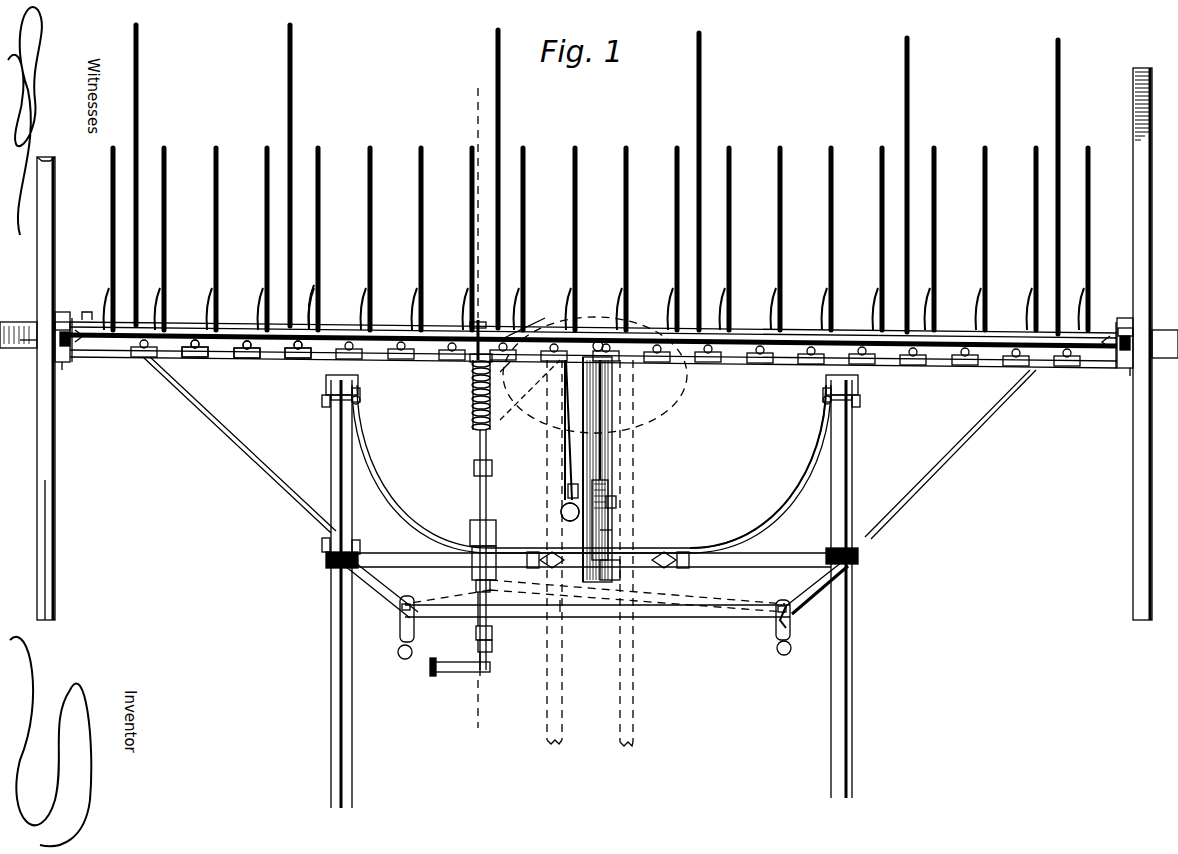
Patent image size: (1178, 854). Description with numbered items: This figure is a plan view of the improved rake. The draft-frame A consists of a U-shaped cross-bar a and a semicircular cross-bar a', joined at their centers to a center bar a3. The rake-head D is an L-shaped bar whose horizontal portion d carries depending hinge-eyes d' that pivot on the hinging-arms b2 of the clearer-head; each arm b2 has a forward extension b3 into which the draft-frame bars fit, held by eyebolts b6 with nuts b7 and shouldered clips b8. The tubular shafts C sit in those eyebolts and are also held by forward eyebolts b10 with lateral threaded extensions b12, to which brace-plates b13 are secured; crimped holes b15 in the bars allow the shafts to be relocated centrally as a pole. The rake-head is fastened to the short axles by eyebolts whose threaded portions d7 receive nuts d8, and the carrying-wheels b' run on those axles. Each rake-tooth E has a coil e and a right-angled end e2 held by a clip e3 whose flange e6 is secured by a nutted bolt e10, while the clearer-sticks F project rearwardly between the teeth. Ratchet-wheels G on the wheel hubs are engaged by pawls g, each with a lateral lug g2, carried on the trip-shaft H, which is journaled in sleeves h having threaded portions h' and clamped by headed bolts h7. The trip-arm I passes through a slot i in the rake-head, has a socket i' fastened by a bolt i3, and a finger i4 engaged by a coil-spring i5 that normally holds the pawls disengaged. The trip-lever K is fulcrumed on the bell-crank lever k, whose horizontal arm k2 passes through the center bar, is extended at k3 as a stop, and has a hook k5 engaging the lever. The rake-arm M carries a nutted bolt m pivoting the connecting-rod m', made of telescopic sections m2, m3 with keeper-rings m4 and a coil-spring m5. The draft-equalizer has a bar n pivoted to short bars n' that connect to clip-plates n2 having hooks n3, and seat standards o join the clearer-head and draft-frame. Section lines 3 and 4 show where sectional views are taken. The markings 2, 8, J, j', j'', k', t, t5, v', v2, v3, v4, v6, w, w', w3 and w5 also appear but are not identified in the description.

The clearer-sticks F is at (597, 179).
The rake-teeth E is at (612, 255).
The coil e is at (362, 290).
The right-angled end e2 is at (345, 330).
The tooth clip e3 is at (295, 358).
The lateral flange e6 is at (243, 340).
The nutted bolt e10 is at (195, 340).
The trip-shaft H is at (593, 332).
The rake-head D is at (222, 360).
The horizontal portion of rake-head d is at (247, 366).
The hinge-eyes d' is at (124, 327).
The threaded portion of eyebolt d7 is at (1040, 368).
The nuts d8 is at (165, 358).
The rake-arm M is at (475, 324).
The nutted bolt m is at (459, 365).
The connecting-rod m' is at (467, 395).
The telescopic section m2 is at (472, 364).
The telescopic section m3 is at (474, 468).
The keeper-ring m4 is at (470, 448).
The coil-spring m5 is at (504, 396).
The trip-arm I is at (590, 330).
The slot i is at (600, 428).
The socket i' is at (530, 392).
The bolt i3 is at (600, 420).
The lateral lug or finger i4 is at (640, 372).
The coil-spring i5 is at (600, 326).
The section line 8 is at (561, 430).
The supporting-standards o is at (676, 410).
The trip-lever K is at (566, 458).
The bell-crank lever k is at (619, 517).
The latch catch k' is at (619, 540).
The horizontal arm k2 is at (618, 500).
The stop extension k3 is at (560, 504).
The curved hook k5 is at (566, 484).
The sleeves h is at (594, 315).
The nutted threaded portion h' is at (93, 292).
The headed bolt h7 is at (58, 326).
The pin j' is at (594, 307).
The pin j'' is at (596, 404).
The pawls g is at (55, 345).
The lateral lug g2 is at (66, 360).
The ratchet-wheels G is at (58, 362).
The bracket J is at (1118, 366).
The upright post 2 is at (1152, 344).
The section line 3 is at (58, 550).
The section line 4 is at (470, 409).
The carrying-wheels b' is at (59, 388).
The hinging-arms b2 is at (886, 380).
The forward rectangular extension b3 is at (362, 390).
The loop or eye bolts b6 is at (324, 402).
The nuts b7 is at (362, 400).
The shouldered clips b8 is at (336, 404).
The forward eyebolt b10 is at (330, 566).
The lateral threaded extensions b12 is at (322, 546).
The brace-plate b13 is at (326, 538).
The holes b15 is at (552, 552).
The shafts C is at (331, 466).
The cross-bar a is at (591, 474).
The cross-bar a' is at (758, 466).
The center bar a3 is at (620, 468).
The draft-frame A is at (591, 545).
The rod t is at (480, 490).
The rod joint t5 is at (472, 530).
The lever v' is at (490, 573).
The foot piece v2 is at (460, 673).
The collar v3 is at (492, 632).
The nut v4 is at (508, 656).
The rod v6 is at (478, 614).
The equalizer bar n is at (588, 614).
The divergent short bars n' is at (630, 622).
The clip-plates n2 is at (350, 574).
The short hooks n3 is at (386, 566).
The hanger w is at (385, 619).
The hanger w' is at (796, 620).
The link w3 is at (783, 617).
The ring w5 is at (794, 644).